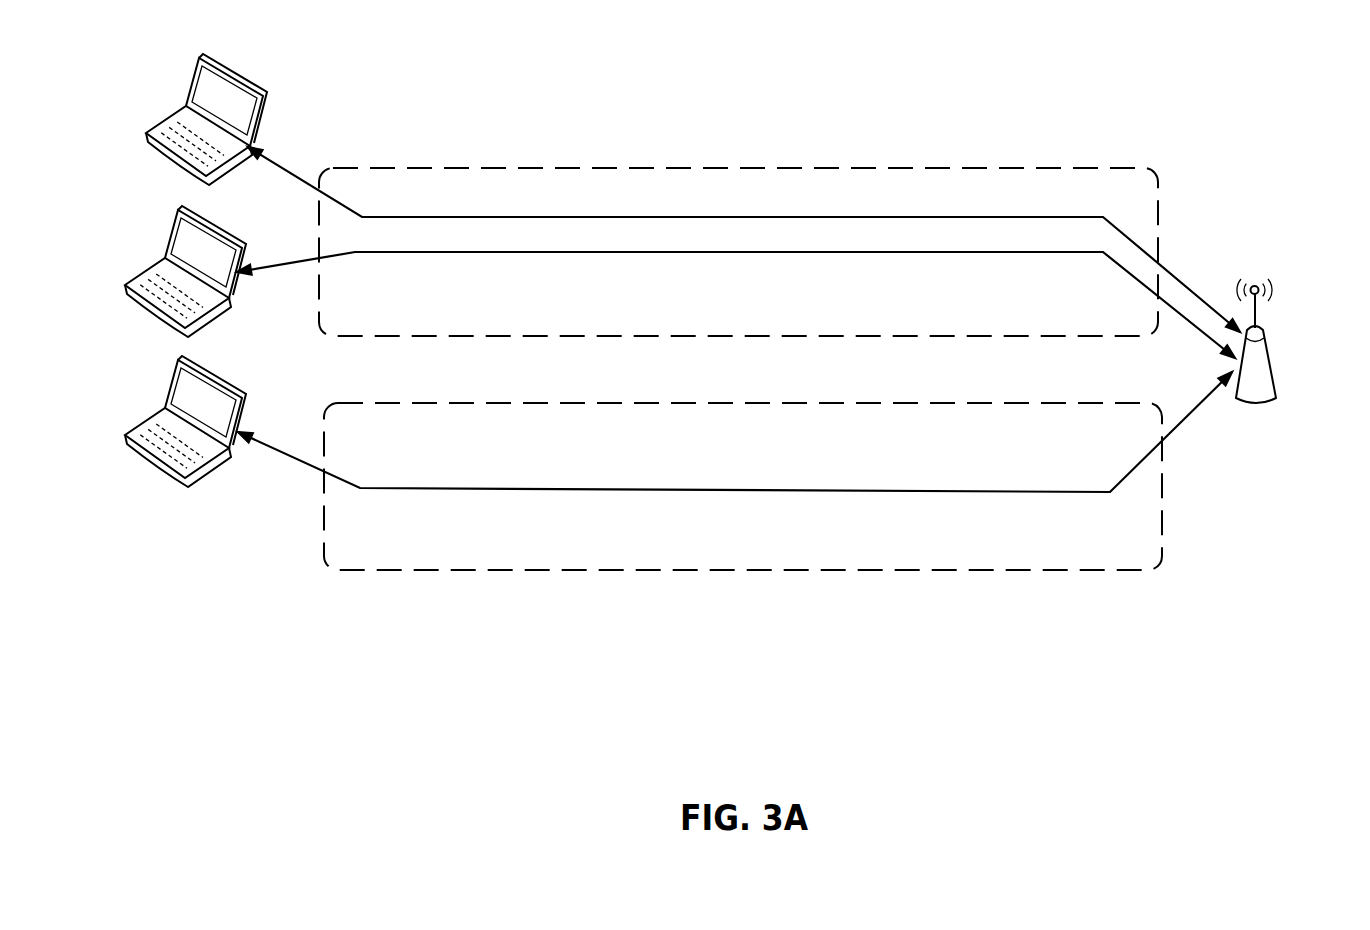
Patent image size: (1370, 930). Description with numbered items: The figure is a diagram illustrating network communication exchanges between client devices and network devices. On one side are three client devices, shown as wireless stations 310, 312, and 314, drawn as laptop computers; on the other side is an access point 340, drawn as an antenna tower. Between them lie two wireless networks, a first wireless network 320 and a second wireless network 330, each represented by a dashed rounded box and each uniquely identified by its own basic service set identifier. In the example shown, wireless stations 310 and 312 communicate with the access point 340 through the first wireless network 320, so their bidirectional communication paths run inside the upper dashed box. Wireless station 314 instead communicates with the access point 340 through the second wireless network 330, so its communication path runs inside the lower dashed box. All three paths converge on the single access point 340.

The wireless station 310 is at (160, 120).
The wireless station 312 is at (142, 270).
The wireless station 314 is at (145, 422).
The first wireless network 320 is at (612, 168).
The second wireless network 330 is at (600, 571).
The access point 340 is at (1268, 348).